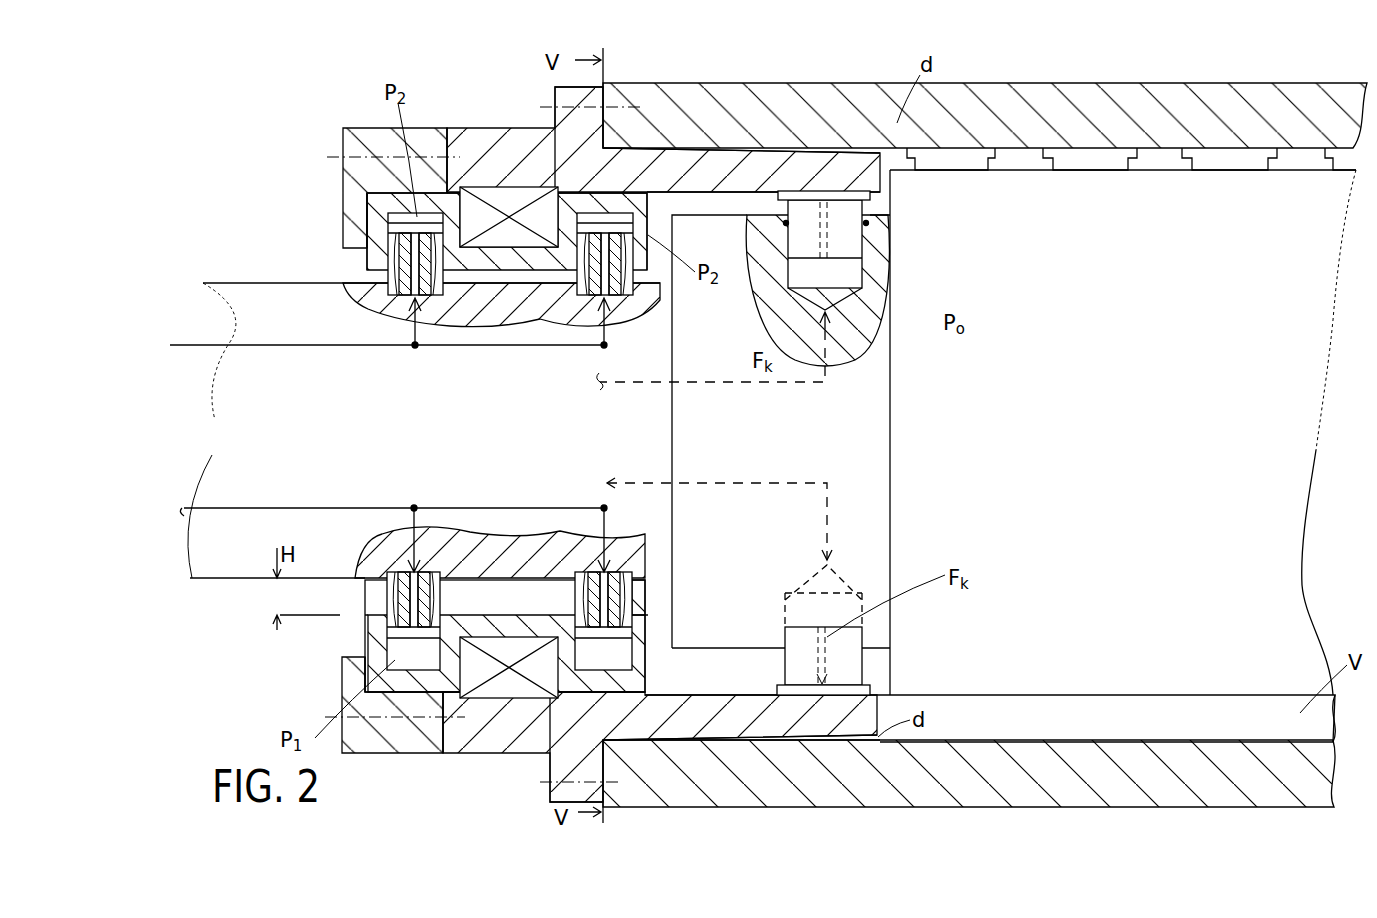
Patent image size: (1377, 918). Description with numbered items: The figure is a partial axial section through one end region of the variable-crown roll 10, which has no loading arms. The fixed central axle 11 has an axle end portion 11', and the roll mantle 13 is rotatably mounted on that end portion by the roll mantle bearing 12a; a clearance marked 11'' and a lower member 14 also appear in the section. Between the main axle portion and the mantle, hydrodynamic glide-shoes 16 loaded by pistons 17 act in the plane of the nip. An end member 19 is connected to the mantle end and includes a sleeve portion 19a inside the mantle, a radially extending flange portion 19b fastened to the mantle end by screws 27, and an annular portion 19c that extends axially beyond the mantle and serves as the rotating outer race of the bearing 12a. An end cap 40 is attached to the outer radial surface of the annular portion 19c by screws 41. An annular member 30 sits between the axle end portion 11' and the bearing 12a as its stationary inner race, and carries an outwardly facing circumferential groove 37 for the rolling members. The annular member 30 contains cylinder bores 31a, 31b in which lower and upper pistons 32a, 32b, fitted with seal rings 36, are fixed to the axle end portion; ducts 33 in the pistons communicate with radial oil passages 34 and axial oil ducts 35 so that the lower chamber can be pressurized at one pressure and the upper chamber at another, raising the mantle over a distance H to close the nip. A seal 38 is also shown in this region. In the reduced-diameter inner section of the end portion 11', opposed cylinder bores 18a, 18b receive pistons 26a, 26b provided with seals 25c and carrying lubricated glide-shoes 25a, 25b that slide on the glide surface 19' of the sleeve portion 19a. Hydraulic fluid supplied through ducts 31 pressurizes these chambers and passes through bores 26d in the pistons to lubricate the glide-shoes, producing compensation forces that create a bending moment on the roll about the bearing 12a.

The variable-crown roll 10 is at (1284, 653).
The central shaft or axle 11 is at (1123, 432).
The axle end portion 11' is at (934, 432).
The clearance gap 11'' is at (309, 589).
The roll mantle bearing 12a is at (520, 198).
The roll mantle 13 is at (1307, 770).
The base slab 14 is at (1307, 813).
The hydrodynamic glide-shoe 16 is at (1006, 165).
The loading piston 17 is at (1125, 167).
The cylinder bore 18a is at (863, 600).
The cylinder bore 18b is at (883, 290).
The end member 19 is at (661, 444).
The glide surface 19' is at (762, 443).
The sleeve portion 19a is at (747, 150).
The flange portion 19b is at (687, 107).
The annular portion 19c is at (487, 158).
The glide-shoe 25a is at (867, 687).
The glide-shoe 25b is at (872, 198).
The seal 25c is at (870, 223).
The piston 26a is at (847, 662).
The piston 26b is at (862, 255).
The bore 26d is at (830, 345).
The screw 27 is at (650, 104).
The annular member 30 is at (520, 257).
The duct 31 is at (615, 475).
The cylinder bore 31a is at (390, 655).
The cylinder bore 31b is at (367, 225).
The piston 32a is at (414, 570).
The piston 32b is at (395, 240).
The duct 33 is at (412, 257).
The radial oil passage 34 is at (420, 347).
The axial oil duct 35 is at (358, 347).
The seal ring 36 is at (630, 620).
The circumferential groove 37 is at (508, 640).
The seal 38 is at (650, 290).
The end cap 40 is at (372, 133).
The screw 41 is at (337, 155).